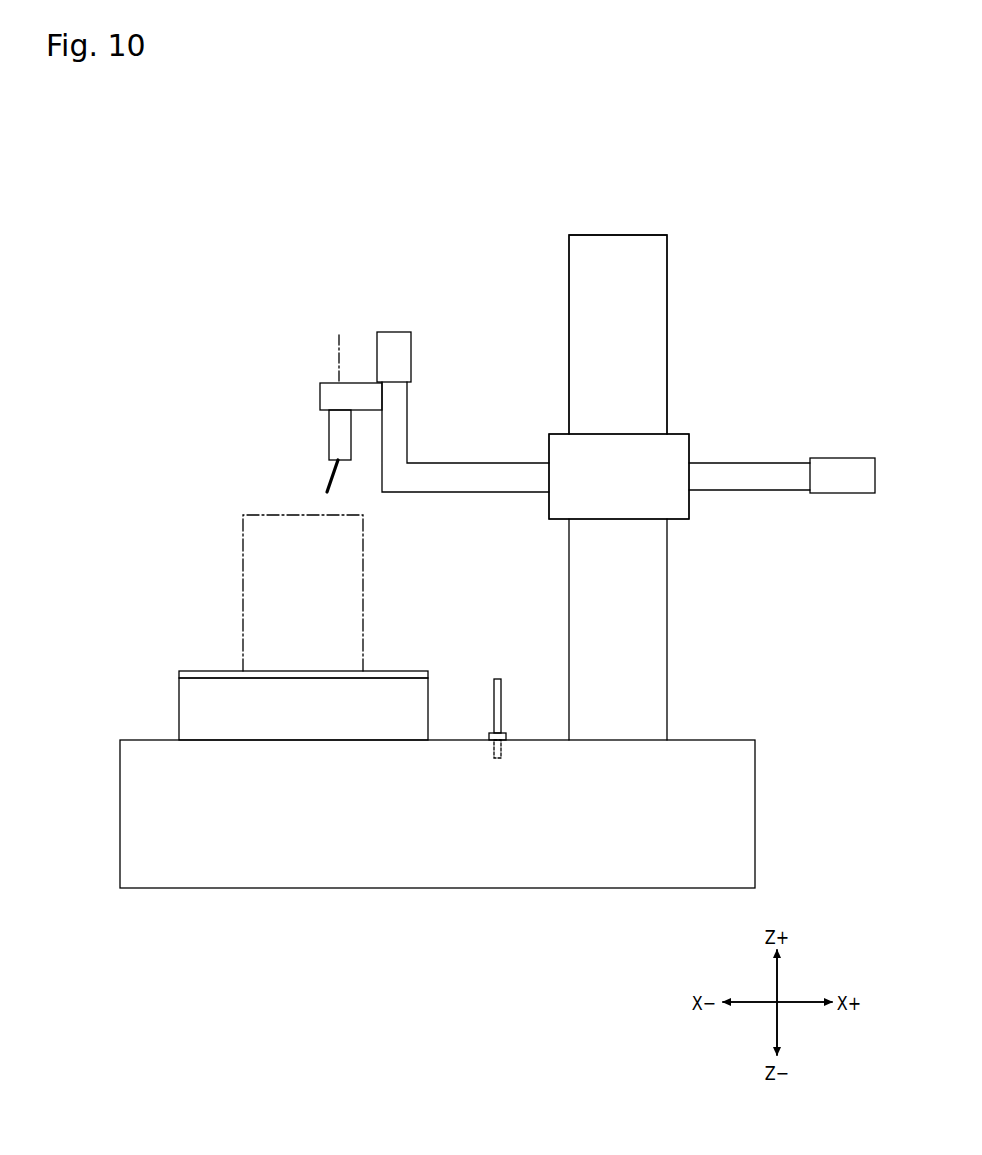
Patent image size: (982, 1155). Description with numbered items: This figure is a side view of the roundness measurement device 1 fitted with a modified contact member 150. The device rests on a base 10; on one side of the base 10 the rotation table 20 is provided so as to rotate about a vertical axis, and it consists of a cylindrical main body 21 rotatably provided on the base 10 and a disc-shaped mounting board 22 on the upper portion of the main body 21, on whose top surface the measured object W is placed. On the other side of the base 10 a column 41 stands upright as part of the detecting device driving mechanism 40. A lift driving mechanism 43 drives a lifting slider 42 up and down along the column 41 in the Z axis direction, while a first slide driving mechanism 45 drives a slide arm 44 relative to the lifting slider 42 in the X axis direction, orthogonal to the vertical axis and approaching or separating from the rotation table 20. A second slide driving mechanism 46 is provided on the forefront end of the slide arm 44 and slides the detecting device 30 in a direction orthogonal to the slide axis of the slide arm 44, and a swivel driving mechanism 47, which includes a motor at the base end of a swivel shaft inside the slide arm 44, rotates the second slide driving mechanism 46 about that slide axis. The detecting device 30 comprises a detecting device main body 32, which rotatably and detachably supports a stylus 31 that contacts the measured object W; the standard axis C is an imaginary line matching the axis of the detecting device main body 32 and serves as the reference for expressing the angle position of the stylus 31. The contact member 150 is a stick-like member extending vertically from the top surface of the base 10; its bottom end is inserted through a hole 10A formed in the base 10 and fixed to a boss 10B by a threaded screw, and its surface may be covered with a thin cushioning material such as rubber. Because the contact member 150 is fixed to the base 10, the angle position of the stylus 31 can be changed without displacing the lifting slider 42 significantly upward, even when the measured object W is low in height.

The roundness measurement device 1 is at (705, 134).
The base 10 is at (443, 889).
The hole 10A is at (502, 752).
The boss 10B is at (506, 736).
The contact member 150 is at (501, 700).
The rotation table 20 is at (310, 700).
The main body 21 is at (266, 724).
The mounting board 22 is at (204, 670).
The detecting device 30 is at (288, 452).
The stylus 31 is at (303, 477).
The detecting device main body 32 is at (329, 432).
The detecting device driving mechanism 40 is at (622, 159).
The column 41 is at (637, 236).
The lifting slider 42 is at (670, 448).
The lift driving mechanism 43 is at (640, 304).
The slide arm 44 is at (776, 463).
The first slide driving mechanism 45 is at (672, 506).
The second slide driving mechanism 46 is at (394, 331).
The swivel driving mechanism 47 is at (846, 459).
The measured object W is at (364, 572).
The standard axis C is at (339, 345).